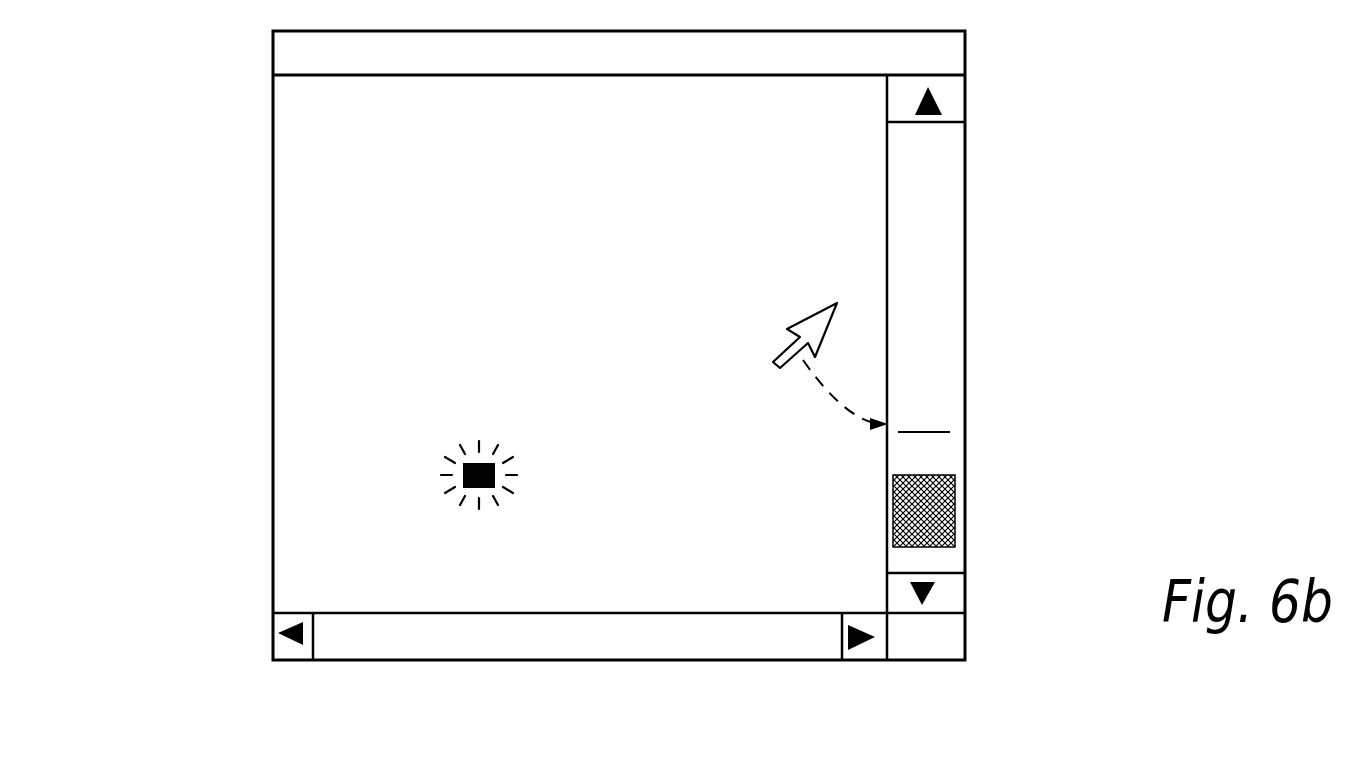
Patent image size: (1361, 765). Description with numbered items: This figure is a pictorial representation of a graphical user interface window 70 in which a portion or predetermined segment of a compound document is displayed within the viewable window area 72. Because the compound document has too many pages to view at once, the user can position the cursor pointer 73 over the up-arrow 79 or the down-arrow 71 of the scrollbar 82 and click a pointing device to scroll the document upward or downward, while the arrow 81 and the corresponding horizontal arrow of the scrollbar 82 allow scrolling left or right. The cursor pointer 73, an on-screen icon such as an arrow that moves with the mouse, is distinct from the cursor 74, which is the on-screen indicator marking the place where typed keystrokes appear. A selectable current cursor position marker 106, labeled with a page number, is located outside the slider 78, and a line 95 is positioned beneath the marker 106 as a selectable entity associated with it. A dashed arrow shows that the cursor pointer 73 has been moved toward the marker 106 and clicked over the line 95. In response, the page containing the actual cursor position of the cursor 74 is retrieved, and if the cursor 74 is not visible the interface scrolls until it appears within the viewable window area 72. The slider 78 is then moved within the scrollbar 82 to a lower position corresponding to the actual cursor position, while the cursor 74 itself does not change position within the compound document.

The graphical user interface window 70 is at (165, 703).
The down-arrow 71 is at (940, 598).
The viewable window area 72 is at (300, 112).
The cursor pointer 73 is at (806, 312).
The cursor 74 is at (508, 445).
The slider 78 is at (955, 507).
The up-arrow 79 is at (946, 103).
The arrow 81 is at (280, 648).
The scrollbar 82 is at (946, 228).
The line 95 is at (935, 433).
The selectable current cursor position marker 106 is at (929, 398).